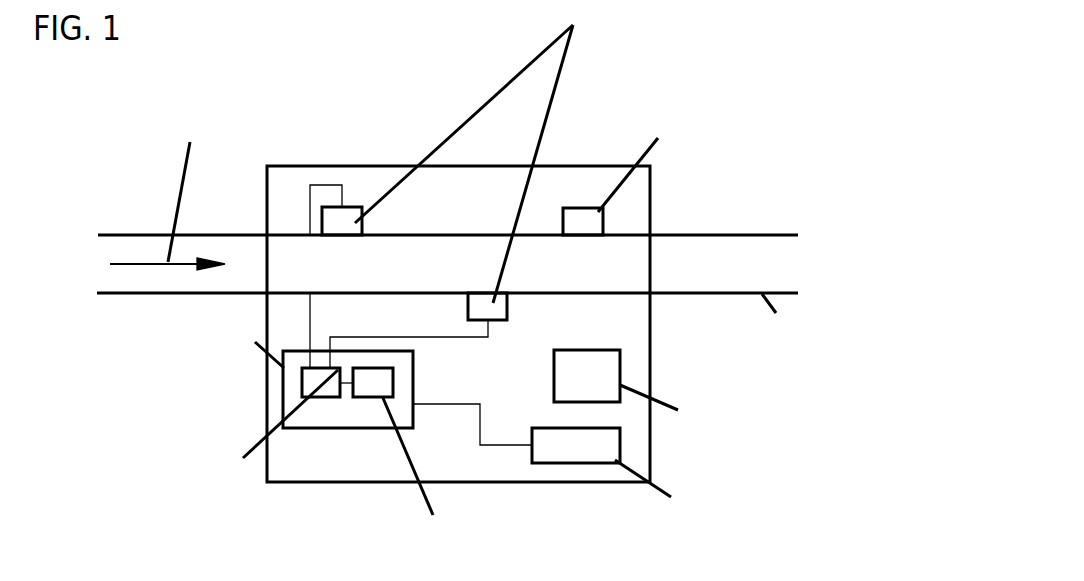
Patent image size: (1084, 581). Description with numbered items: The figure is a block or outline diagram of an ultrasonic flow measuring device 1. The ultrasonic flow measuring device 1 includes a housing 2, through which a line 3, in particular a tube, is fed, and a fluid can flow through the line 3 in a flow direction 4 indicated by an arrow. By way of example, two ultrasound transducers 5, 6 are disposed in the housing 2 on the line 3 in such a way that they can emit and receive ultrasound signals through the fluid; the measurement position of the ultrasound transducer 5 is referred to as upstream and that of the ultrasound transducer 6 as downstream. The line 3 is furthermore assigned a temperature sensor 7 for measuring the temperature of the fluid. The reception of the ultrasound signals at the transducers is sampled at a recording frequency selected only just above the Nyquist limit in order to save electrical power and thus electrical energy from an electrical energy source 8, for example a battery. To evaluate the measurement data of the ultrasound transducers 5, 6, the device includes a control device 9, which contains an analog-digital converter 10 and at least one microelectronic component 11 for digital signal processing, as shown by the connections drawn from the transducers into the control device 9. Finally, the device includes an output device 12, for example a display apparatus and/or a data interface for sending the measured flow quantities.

The ultrasonic flow measuring device 1 is at (598, 141).
The housing 2 is at (475, 165).
The line 3 is at (738, 296).
The flow direction 4 is at (158, 261).
The ultrasound transducer 5 is at (351, 207).
The ultrasound transducer 6 is at (507, 305).
The temperature sensor 7 is at (604, 222).
The electrical energy source 8 is at (620, 375).
The control device 9 is at (283, 388).
The analog-digital converter 10 is at (321, 398).
The microelectronic component 11 is at (372, 398).
The output device 12 is at (620, 445).